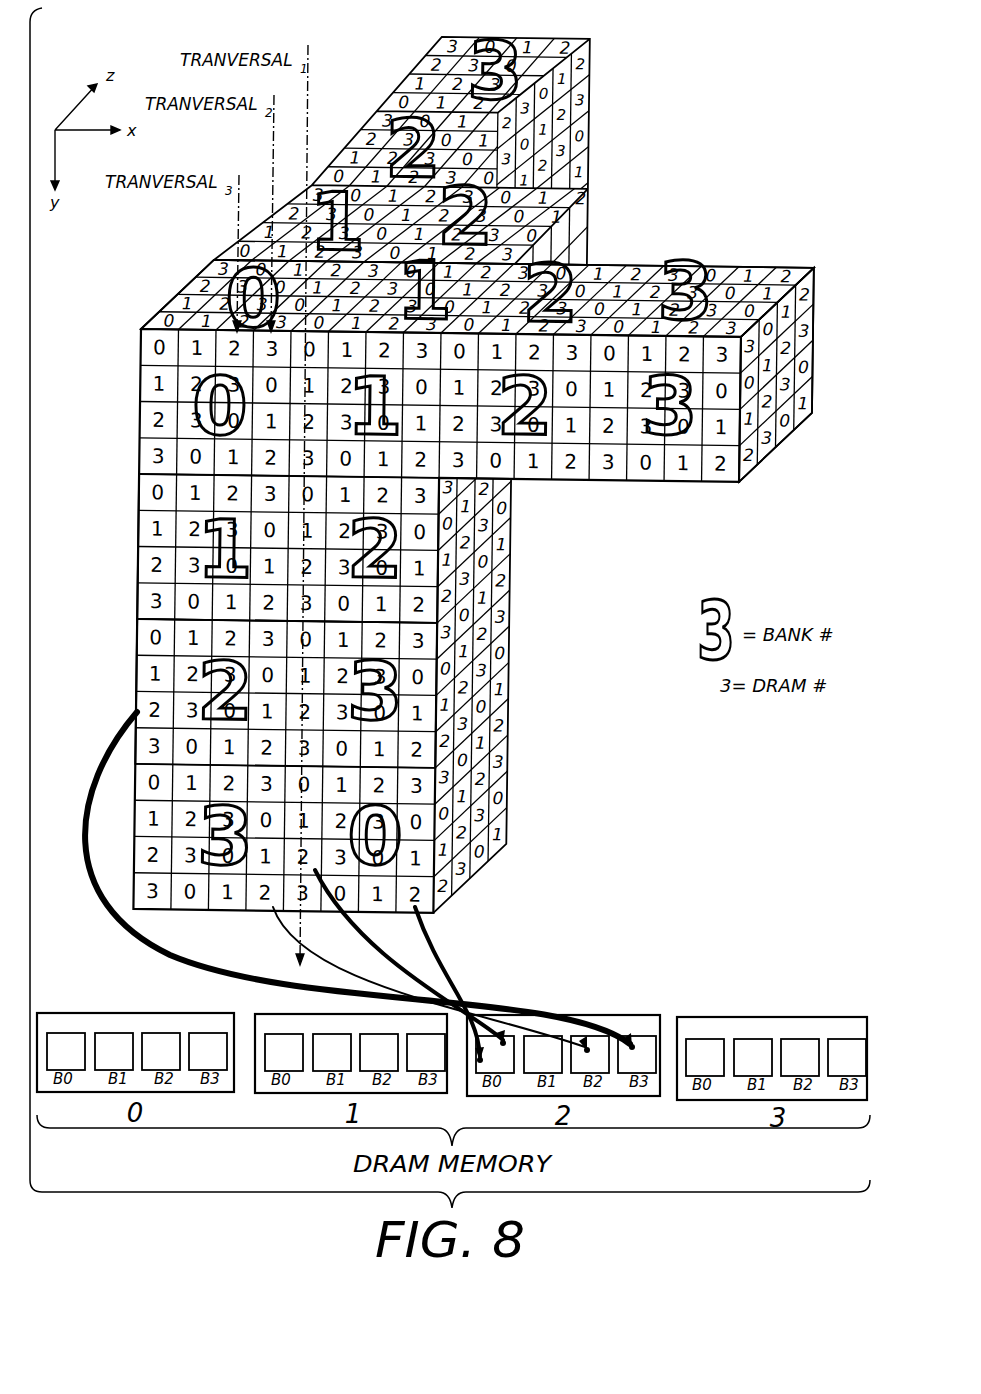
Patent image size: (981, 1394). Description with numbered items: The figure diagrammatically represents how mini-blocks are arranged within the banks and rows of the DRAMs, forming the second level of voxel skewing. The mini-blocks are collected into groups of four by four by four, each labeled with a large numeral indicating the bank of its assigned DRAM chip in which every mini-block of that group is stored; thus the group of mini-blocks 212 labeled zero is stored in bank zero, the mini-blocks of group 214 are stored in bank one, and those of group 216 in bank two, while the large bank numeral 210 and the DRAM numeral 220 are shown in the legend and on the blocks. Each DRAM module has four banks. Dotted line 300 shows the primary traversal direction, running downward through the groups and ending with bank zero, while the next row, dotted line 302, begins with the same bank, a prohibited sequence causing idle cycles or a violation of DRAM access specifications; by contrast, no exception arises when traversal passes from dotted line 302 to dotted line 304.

The bank number 210 is at (682, 270).
The group of mini-blocks 212 is at (191, 280).
The group of mini-blocks 214 is at (138, 546).
The group of mini-blocks 216 is at (136, 682).
The DRAM number 220 is at (700, 481).
The dotted line 300 is at (310, 87).
The dotted line 302 is at (268, 175).
The dotted line 304 is at (236, 249).